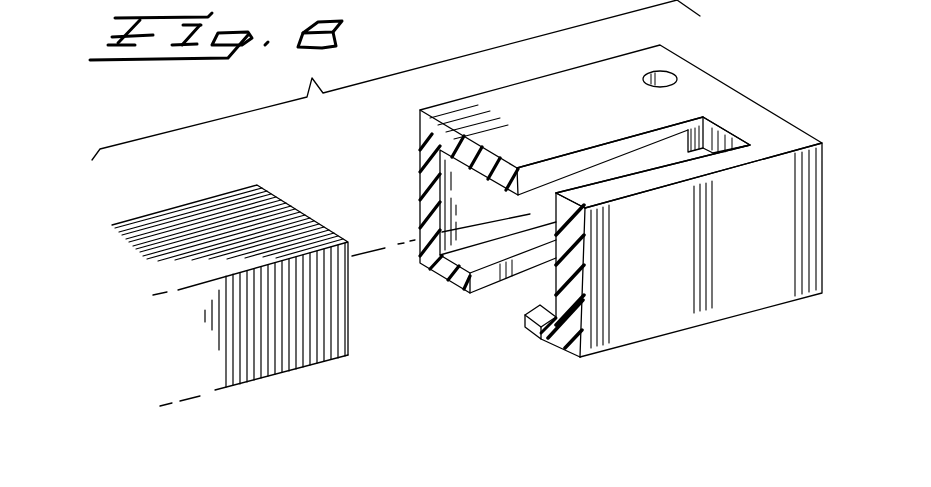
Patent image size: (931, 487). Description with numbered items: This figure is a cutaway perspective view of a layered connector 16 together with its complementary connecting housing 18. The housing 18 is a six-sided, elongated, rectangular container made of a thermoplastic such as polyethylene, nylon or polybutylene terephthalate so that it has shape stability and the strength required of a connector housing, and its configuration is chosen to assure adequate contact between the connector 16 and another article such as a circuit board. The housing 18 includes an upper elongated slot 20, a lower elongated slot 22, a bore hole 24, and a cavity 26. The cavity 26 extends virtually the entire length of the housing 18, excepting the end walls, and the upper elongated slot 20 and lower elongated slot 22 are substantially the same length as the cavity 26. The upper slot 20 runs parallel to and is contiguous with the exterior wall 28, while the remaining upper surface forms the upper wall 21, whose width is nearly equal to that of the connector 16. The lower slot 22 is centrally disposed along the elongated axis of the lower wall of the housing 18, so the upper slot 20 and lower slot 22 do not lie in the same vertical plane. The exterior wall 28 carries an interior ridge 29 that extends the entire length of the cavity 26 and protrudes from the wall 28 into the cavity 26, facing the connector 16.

The layered connector 16 is at (320, 365).
The connecting housing 18 is at (706, 324).
The upper elongated slot 20 is at (720, 142).
The upper wall 21 is at (537, 100).
The lower elongated slot 22 is at (523, 316).
The bore hole 24 is at (668, 80).
The cavity 26 is at (457, 176).
The exterior wall 28 is at (785, 272).
The interior ridge 29 is at (545, 286).